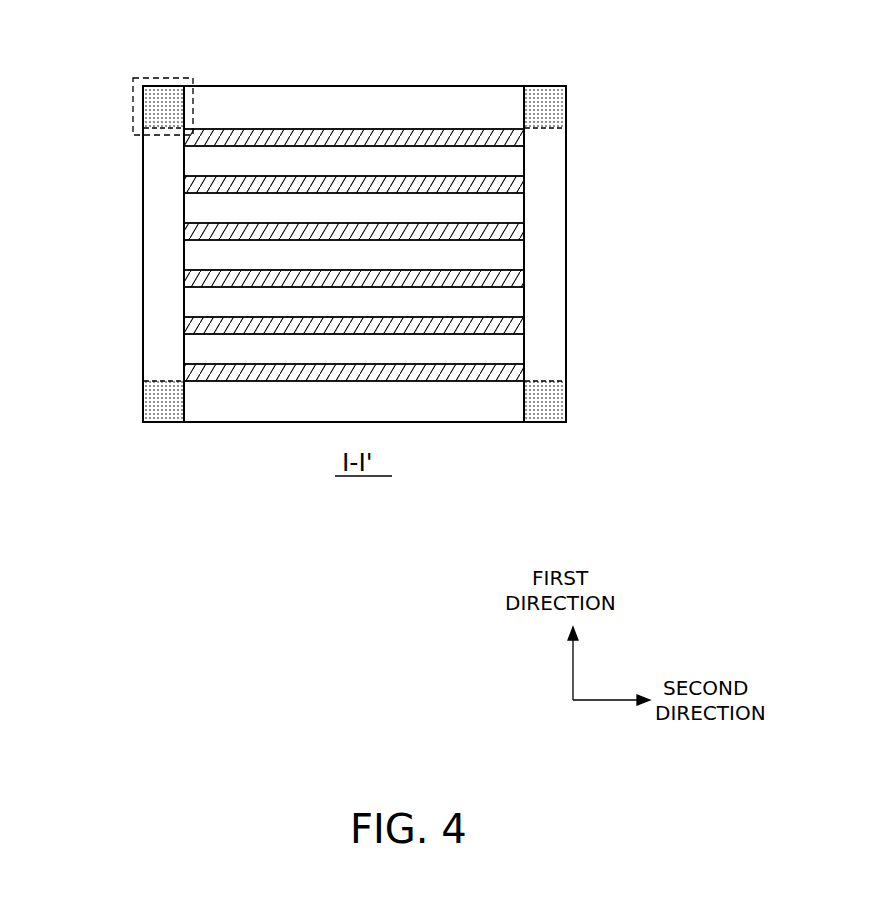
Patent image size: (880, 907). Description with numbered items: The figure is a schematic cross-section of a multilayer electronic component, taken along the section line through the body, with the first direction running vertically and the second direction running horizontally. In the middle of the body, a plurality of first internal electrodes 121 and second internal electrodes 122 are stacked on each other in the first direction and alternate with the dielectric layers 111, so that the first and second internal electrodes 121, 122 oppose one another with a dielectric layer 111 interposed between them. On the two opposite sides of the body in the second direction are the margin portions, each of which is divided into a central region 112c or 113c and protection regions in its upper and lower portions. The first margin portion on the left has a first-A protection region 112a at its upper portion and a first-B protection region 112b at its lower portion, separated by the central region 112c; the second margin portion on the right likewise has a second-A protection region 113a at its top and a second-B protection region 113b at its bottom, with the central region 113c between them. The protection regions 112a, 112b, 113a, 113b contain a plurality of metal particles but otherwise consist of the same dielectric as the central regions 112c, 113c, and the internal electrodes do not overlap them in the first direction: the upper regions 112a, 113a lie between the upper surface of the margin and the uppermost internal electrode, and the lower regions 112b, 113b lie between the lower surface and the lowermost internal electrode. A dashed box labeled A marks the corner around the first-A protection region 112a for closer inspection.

The dielectric layer 111 is at (365, 163).
The first internal electrode 121 is at (417, 137).
The second internal electrode 122 is at (308, 183).
The first-A protection region 112a is at (155, 102).
The first-B protection region 112b is at (152, 393).
The central region 112c is at (157, 237).
The second-A protection region 113a is at (560, 108).
The second-B protection region 113b is at (560, 392).
The central region 113c is at (560, 240).
The enlarged region A is at (133, 122).